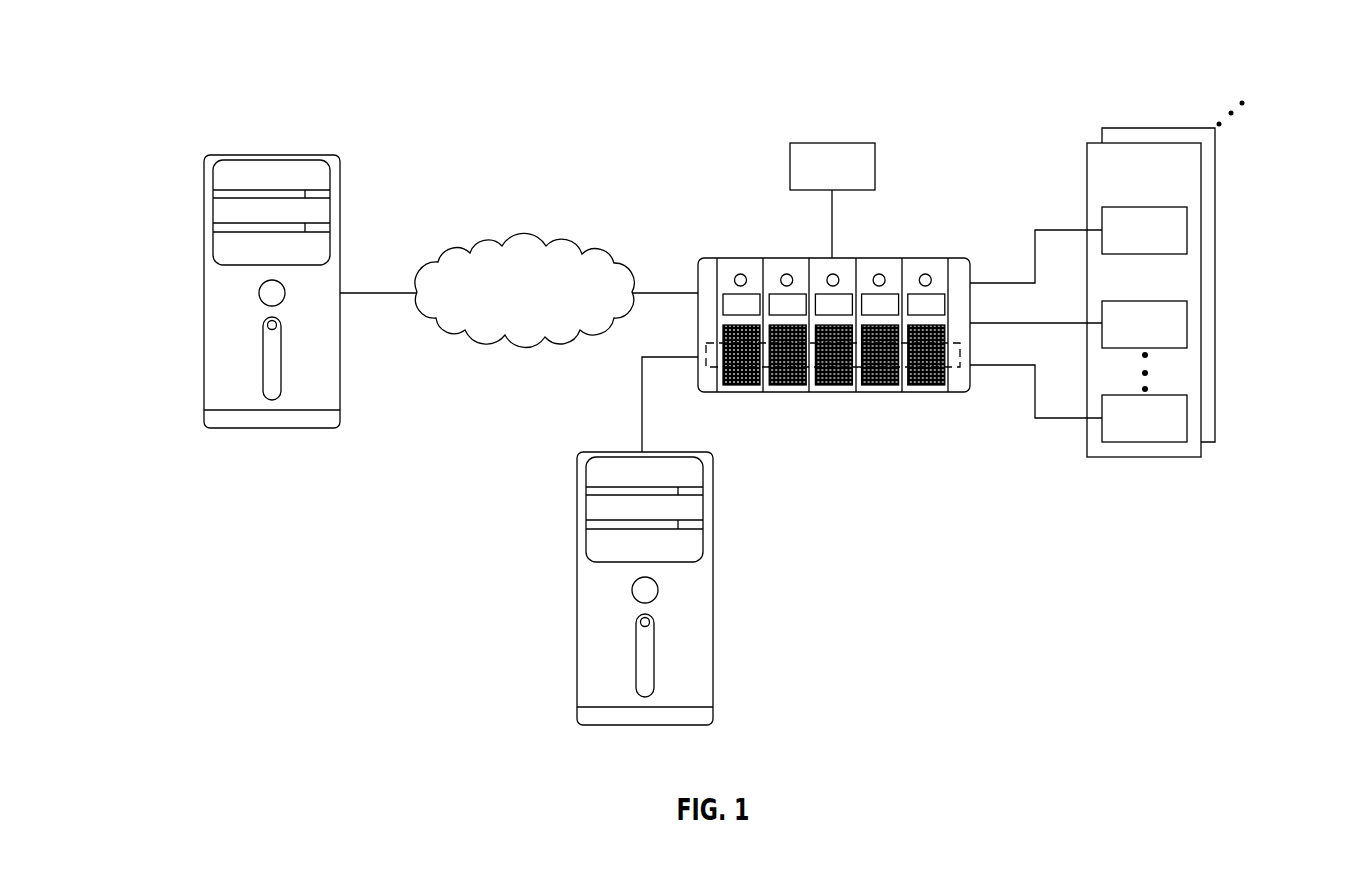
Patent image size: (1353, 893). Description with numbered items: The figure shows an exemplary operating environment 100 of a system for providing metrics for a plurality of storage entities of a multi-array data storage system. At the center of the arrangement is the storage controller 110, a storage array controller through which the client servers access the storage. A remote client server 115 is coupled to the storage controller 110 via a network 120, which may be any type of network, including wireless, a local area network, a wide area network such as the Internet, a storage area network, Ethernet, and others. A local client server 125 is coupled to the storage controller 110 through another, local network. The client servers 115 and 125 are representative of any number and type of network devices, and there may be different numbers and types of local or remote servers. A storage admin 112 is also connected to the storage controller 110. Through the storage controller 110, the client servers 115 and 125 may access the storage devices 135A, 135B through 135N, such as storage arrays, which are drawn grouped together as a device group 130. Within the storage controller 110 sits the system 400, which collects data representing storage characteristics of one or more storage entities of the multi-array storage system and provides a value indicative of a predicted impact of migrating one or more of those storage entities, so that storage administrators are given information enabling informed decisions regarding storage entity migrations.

The operating environment 100 is at (198, 60).
The storage controller 110 is at (844, 328).
The storage admin 112 is at (835, 143).
The client server 115 is at (266, 155).
The network 120 is at (523, 339).
The client server 125 is at (641, 452).
The device group 130 is at (1191, 297).
The storage device 135A is at (1187, 230).
The storage device 135B is at (1187, 323).
The storage device 135N is at (1187, 418).
The system 400 is at (958, 368).